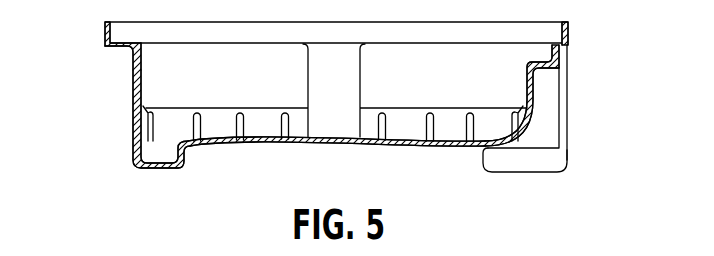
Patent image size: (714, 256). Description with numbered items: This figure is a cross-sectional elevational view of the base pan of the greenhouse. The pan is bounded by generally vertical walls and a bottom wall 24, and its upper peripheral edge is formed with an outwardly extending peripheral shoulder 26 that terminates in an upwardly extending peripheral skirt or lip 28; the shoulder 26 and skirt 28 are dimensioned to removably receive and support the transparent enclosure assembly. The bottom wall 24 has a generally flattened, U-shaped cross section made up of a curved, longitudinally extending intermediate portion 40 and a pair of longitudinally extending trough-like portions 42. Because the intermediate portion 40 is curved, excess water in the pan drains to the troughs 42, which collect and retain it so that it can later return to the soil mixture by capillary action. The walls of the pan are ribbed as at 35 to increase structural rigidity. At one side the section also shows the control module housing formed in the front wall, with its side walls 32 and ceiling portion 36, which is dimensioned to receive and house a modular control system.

The bottom wall 24 is at (295, 148).
The peripheral shoulder 26 is at (125, 48).
The peripheral skirt or lip 28 is at (105, 34).
The side walls of control module housing 32 is at (546, 118).
The ribs 35 is at (240, 112).
The ceiling portion 36 is at (533, 90).
The curved intermediate portion 40 is at (262, 136).
The trough-like portions 42 is at (160, 170).